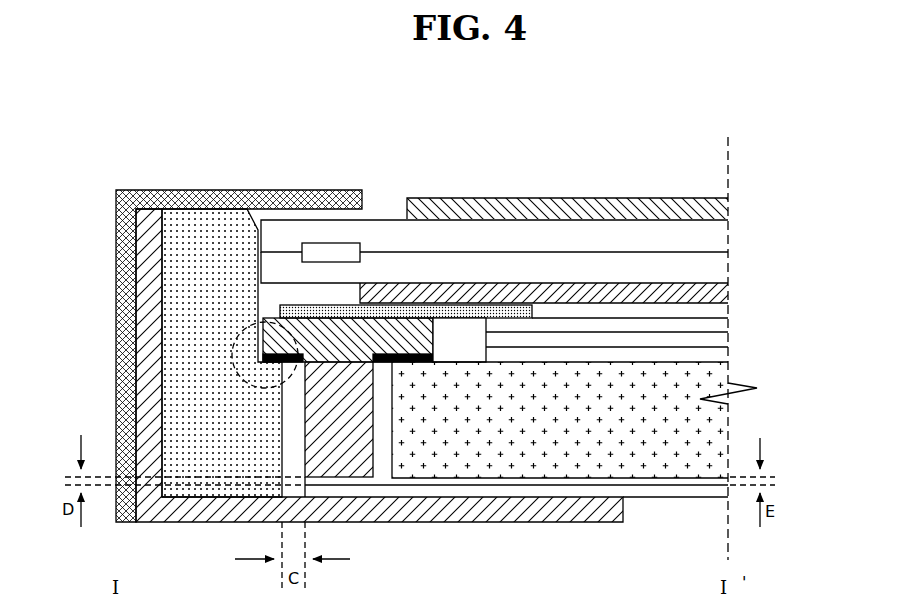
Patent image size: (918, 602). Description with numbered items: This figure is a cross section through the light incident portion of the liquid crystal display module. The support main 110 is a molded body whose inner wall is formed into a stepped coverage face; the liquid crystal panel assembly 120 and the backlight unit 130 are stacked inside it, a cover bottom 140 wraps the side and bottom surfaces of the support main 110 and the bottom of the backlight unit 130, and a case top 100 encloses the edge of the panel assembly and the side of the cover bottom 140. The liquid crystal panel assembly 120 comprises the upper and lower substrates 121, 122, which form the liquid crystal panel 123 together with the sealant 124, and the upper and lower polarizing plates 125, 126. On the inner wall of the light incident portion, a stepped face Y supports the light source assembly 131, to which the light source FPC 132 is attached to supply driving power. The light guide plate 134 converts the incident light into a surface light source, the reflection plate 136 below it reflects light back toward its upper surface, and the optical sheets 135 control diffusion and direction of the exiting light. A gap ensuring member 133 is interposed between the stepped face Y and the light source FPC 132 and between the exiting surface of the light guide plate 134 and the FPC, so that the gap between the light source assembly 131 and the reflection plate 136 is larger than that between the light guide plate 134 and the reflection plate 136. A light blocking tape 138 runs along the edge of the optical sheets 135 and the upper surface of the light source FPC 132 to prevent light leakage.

The case top 100 is at (126, 228).
The support main 110 is at (178, 257).
The liquid crystal panel assembly 120 is at (585, 231).
The upper substrate 121 is at (720, 232).
The lower substrate 122 is at (720, 265).
The liquid crystal panel 123 is at (557, 251).
The sealant 124 is at (362, 252).
The upper polarizing plate 125 is at (720, 207).
The lower polarizing plate 126 is at (720, 292).
The backlight unit 130 is at (468, 419).
The light source assembly 131 is at (320, 410).
The light source FPC 132 is at (296, 338).
The gap ensuring member 133 is at (262, 358).
The light guide plate 134 is at (715, 418).
The optical sheets 135 is at (743, 318).
The reflection plate 136 is at (662, 497).
The light blocking tape 138 is at (280, 313).
The cover bottom 140 is at (518, 522).
The light incident portion side stepped face Y is at (240, 381).